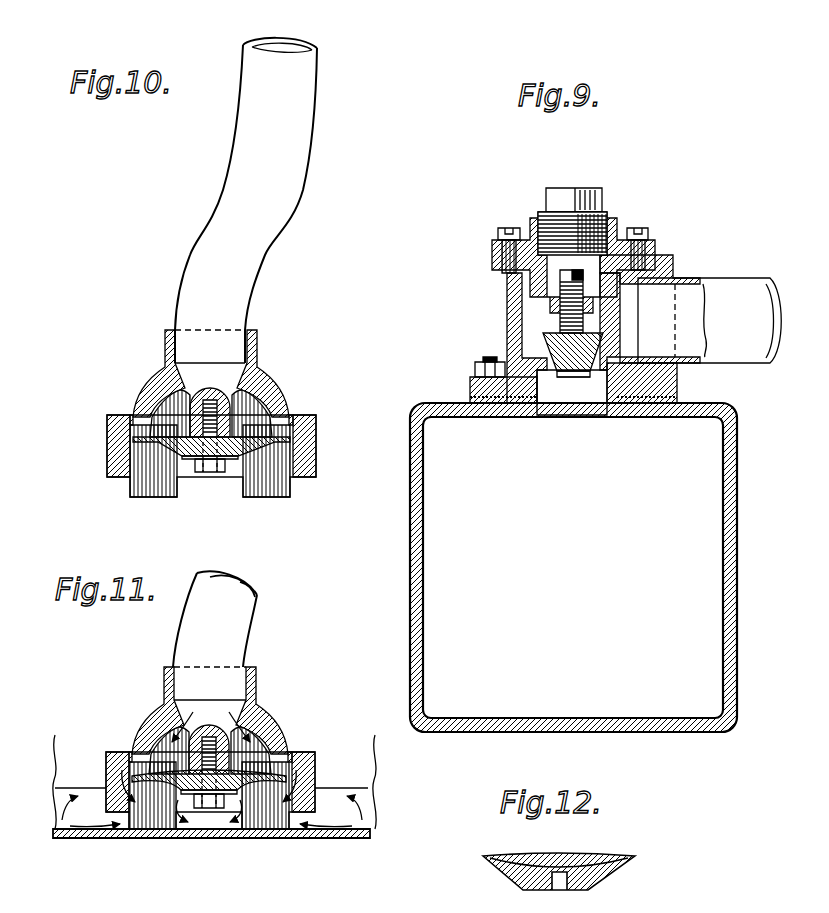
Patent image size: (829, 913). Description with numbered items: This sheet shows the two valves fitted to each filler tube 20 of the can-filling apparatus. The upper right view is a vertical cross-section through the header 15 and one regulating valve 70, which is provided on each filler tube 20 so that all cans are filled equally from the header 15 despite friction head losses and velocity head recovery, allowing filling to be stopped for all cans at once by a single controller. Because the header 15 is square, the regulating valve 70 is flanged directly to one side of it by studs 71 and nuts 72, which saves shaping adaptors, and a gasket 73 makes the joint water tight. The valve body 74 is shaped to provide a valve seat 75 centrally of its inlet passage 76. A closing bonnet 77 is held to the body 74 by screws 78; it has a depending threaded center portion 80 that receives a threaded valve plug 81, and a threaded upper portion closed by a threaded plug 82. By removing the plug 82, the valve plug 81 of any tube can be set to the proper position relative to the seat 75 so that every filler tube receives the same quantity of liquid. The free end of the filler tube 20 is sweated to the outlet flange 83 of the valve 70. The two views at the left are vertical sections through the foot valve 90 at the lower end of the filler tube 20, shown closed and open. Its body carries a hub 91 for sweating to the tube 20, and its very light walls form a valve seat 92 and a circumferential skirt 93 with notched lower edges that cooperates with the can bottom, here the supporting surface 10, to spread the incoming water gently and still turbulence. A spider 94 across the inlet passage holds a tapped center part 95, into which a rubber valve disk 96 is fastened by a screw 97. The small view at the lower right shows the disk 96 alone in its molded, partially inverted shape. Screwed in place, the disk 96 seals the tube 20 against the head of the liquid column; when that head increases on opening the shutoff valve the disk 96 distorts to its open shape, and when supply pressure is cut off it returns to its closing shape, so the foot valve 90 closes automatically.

In FIG. 11, the supporting floor surface 10 is at (280, 838).
In FIG. 9, the header 15 is at (404, 562).
In FIG. 9, the filler tube 20 is at (740, 286).
In FIG. 10, the filler tube 20 is at (303, 72).
In FIG. 11, the filler tube 20 is at (242, 616).
In FIG. 9, the regulating valve 70 is at (478, 273).
In FIG. 9, the stud 71 is at (483, 358).
In FIG. 9, the nut 72 is at (474, 368).
In FIG. 9, the gasket 73 is at (652, 402).
In FIG. 9, the valve body 74 is at (507, 300).
In FIG. 9, the valve seat 75 is at (592, 372).
In FIG. 9, the inlet passage 76 is at (560, 397).
In FIG. 9, the closing bonnet 77 is at (524, 232).
In FIG. 9, the screw 78 is at (504, 228).
In FIG. 9, the depending threaded center portion 80 is at (584, 306).
In FIG. 9, the threaded valve plug 81 is at (545, 340).
In FIG. 9, the threaded plug 82 is at (586, 190).
In FIG. 9, the outlet flange 83 is at (660, 268).
In FIG. 10, the foot valve 90 is at (148, 366).
In FIG. 11, the foot valve 90 is at (143, 706).
In FIG. 10, the hub 91 is at (255, 348).
In FIG. 11, the hub 91 is at (258, 676).
In FIG. 10, the valve seat 92 is at (140, 430).
In FIG. 11, the valve seat 92 is at (125, 777).
In FIG. 10, the circumferential skirt 93 is at (124, 462).
In FIG. 11, the circumferential skirt 93 is at (105, 786).
In FIG. 10, the spider 94 is at (262, 405).
In FIG. 11, the spider 94 is at (172, 752).
In FIG. 10, the tapped center part 95 is at (222, 391).
In FIG. 11, the tapped center part 95 is at (245, 742).
In FIG. 10, the valve disk 96 is at (252, 446).
In FIG. 11, the valve disk 96 is at (168, 786).
In FIG. 12, the valve disk 96 is at (500, 875).
In FIG. 10, the screw 97 is at (216, 448).
In FIG. 11, the screw 97 is at (208, 800).